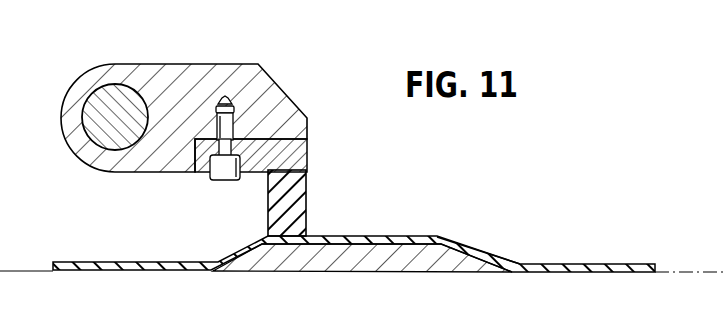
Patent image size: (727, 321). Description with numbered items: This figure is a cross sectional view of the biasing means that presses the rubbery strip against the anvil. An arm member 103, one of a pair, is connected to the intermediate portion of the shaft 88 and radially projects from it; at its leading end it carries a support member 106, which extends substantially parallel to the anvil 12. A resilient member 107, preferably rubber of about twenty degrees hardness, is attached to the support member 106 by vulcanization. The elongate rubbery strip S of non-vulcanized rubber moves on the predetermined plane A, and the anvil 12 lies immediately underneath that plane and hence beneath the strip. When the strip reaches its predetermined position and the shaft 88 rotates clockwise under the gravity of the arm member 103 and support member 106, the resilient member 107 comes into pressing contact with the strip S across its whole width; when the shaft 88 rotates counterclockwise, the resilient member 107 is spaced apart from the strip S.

The arm member 103 is at (213, 65).
The shaft 88 is at (90, 94).
The support member 106 is at (308, 153).
The resilient member 107 is at (307, 195).
The anvil 12 is at (365, 263).
The elongate rubbery strip S is at (478, 247).
The predetermined plane A is at (681, 268).